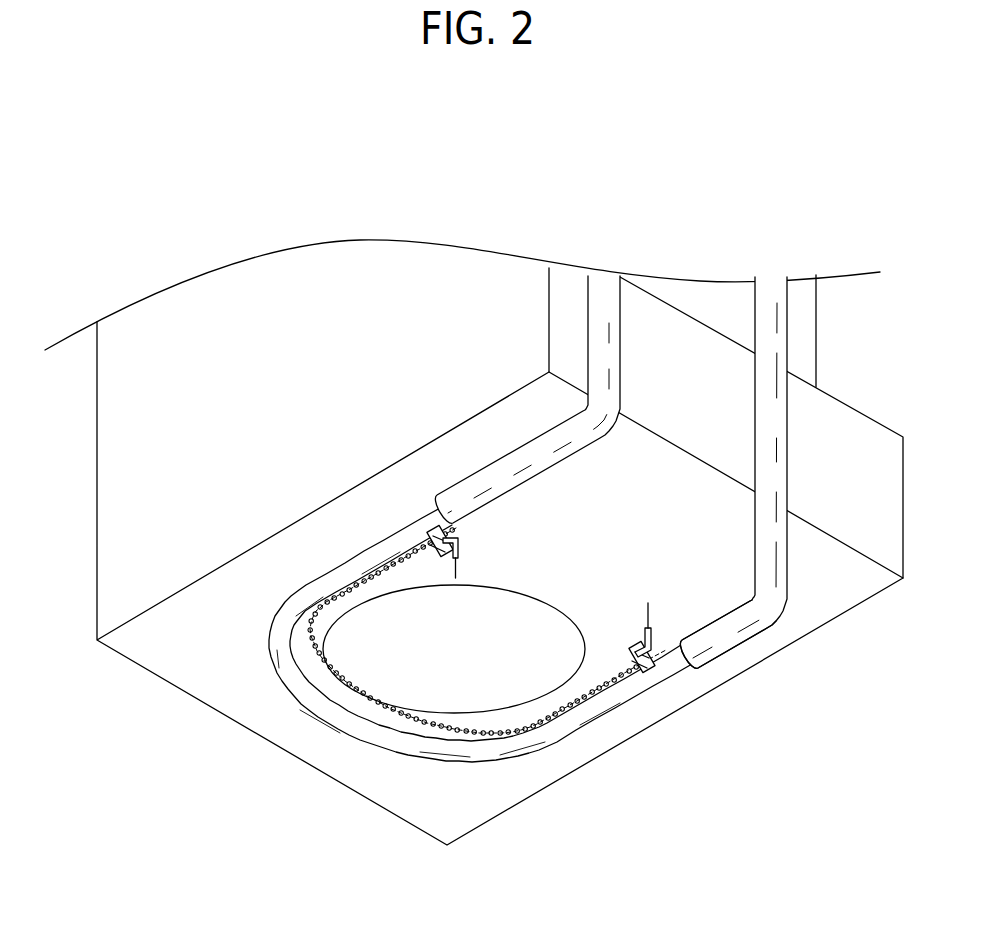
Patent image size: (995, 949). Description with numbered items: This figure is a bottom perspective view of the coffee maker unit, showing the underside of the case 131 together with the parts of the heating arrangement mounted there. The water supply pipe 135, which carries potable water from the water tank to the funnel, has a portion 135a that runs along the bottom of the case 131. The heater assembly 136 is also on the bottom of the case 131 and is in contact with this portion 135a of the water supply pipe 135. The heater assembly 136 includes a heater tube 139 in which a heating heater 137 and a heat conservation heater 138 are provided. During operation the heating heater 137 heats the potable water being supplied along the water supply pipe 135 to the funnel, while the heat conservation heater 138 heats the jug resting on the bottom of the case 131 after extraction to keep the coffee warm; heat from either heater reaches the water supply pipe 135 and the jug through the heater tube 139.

The case 131 is at (118, 520).
The water supply pipe 135 is at (597, 303).
The portion of the water supply pipe 135a is at (650, 679).
The heater assembly 136 is at (558, 720).
The heating heater 137 is at (434, 527).
The heat conservation heater 138 is at (459, 548).
The heater tube 139 is at (365, 706).